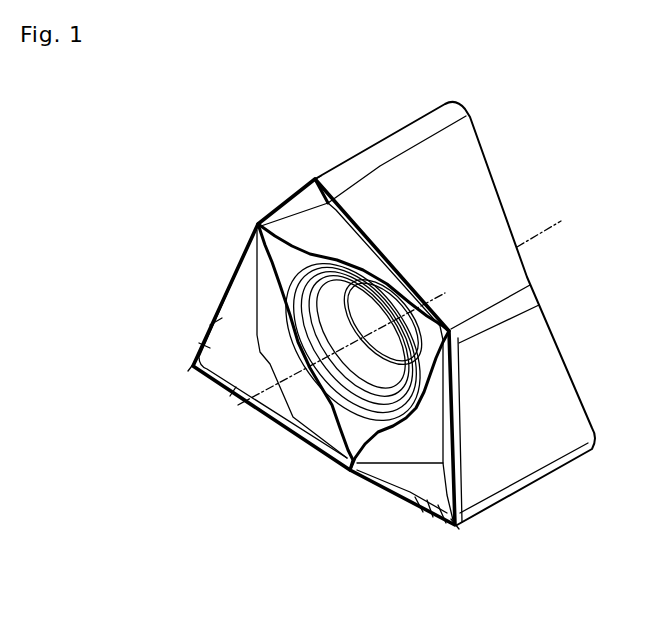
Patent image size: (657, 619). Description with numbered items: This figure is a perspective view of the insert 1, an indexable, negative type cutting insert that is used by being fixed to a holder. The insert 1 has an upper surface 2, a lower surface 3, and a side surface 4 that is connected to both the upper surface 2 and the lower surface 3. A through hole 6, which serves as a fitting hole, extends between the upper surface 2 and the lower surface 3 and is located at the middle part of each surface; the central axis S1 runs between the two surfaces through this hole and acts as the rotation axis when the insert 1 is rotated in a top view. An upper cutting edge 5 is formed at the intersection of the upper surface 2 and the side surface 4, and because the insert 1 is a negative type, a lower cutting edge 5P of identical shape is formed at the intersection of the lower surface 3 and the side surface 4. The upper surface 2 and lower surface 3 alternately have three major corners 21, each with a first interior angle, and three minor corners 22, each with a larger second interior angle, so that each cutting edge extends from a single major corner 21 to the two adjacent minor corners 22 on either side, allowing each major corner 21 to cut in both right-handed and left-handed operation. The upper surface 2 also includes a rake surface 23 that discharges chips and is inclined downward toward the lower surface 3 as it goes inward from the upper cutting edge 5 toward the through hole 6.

The insert 1 is at (505, 108).
The upper surface 2 is at (268, 294).
The lower surface 3 is at (546, 314).
The side surface 4 is at (517, 433).
The upper cutting edge 5 is at (302, 450).
The lower cutting edge 5P is at (508, 217).
The central axis S1 is at (232, 410).
The through hole 6 is at (343, 406).
The major corner 21 is at (316, 176).
The minor corner 22 is at (256, 220).
The rake surface 23 is at (216, 321).